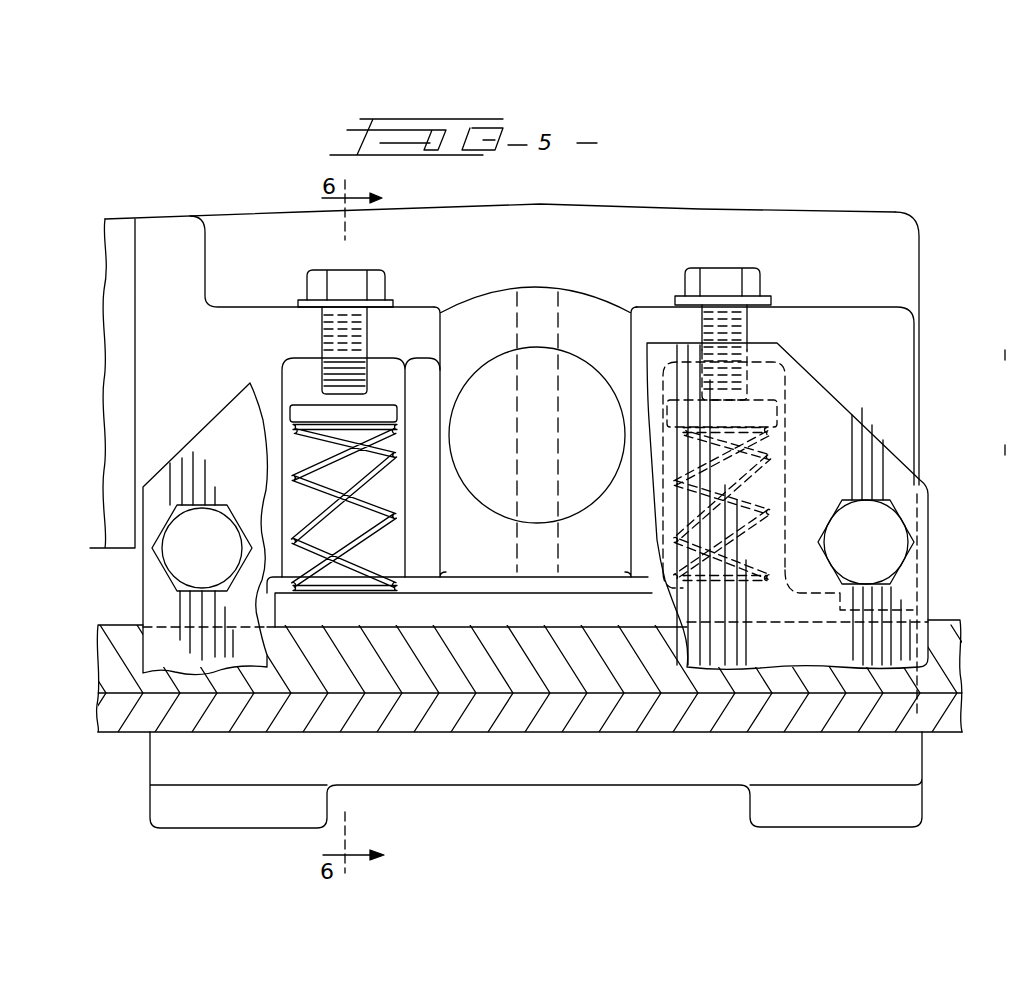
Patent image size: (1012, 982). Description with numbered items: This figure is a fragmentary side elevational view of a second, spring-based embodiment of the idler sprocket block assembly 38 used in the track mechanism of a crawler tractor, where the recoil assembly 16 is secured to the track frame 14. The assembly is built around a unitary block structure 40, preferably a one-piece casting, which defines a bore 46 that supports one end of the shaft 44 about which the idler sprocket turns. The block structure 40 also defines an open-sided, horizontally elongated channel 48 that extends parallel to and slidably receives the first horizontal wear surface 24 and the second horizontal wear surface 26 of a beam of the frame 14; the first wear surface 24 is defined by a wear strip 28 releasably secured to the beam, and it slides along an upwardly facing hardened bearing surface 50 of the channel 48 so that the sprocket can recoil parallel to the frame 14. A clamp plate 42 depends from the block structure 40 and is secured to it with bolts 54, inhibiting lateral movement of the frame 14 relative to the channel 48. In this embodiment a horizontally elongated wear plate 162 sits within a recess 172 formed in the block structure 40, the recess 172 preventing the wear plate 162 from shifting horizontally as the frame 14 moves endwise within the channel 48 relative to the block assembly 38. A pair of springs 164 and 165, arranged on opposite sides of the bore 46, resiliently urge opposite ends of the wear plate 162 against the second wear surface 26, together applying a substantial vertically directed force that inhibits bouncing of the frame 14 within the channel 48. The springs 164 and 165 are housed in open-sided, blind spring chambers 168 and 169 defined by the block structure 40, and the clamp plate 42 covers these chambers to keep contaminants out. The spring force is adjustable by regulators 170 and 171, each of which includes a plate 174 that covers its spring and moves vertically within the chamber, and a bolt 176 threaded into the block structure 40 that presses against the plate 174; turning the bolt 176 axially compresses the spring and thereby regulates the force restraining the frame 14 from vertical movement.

The track frame 14 is at (955, 620).
The recoil assembly 16 is at (121, 212).
The first horizontal wear surface 24 is at (140, 737).
The second horizontal wear surface 26 is at (133, 627).
The wear strip 28 is at (127, 722).
The block assembly 38 is at (876, 216).
The unitary block structure 40 is at (703, 242).
The clamp plate 42 is at (900, 494).
The shaft 44 is at (563, 388).
The bore 46 is at (508, 357).
The channel 48 is at (910, 617).
The horizontal bearing surface 50 is at (507, 722).
The bolts 54 is at (190, 537).
The wear plate 162 is at (630, 613).
The spring 164 is at (788, 458).
The spring 165 is at (290, 428).
The spring chamber 168 is at (783, 340).
The spring chamber 169 is at (297, 372).
The regulator 170 is at (762, 286).
The regulator 171 is at (391, 289).
The recess 172 is at (790, 577).
The plate 174 is at (384, 410).
The bolt 176 is at (306, 285).